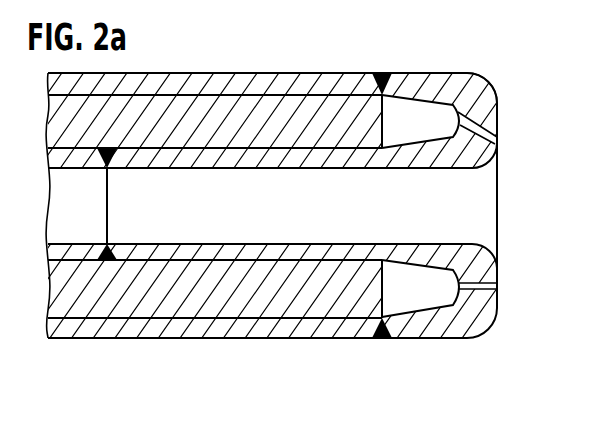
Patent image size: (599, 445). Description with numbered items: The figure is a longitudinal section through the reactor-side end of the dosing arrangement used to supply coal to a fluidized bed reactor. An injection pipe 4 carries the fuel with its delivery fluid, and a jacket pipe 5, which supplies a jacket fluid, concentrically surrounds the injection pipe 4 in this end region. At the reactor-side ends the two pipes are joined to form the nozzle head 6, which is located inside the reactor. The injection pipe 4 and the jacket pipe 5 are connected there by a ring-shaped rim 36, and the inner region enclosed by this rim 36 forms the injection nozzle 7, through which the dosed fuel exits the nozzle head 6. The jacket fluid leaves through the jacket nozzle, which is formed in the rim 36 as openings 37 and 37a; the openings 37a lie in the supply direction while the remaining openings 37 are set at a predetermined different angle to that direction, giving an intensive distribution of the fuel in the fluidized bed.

The injection pipe 4 is at (173, 254).
The jacket pipe 5 is at (222, 329).
The nozzle head 6 is at (262, 346).
The injection nozzle 7 is at (482, 208).
The ring-shaped rim 36 is at (497, 110).
The opening 37 is at (497, 148).
The opening 37a is at (497, 288).